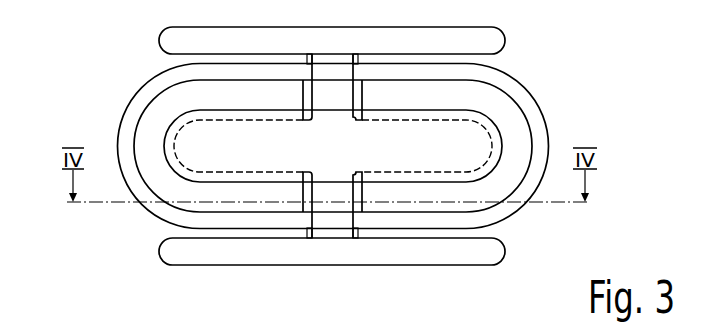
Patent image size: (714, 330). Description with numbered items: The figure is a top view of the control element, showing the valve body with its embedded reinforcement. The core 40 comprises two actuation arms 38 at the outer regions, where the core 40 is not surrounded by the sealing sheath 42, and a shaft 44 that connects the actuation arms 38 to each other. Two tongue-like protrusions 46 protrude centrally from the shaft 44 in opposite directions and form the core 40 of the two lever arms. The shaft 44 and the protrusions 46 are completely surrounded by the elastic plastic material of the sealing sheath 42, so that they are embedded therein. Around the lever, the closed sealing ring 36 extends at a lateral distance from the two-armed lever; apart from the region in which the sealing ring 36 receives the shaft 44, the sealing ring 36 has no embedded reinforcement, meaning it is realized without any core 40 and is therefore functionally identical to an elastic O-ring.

The sealing ring 36 is at (512, 90).
The actuation arms 38 is at (332, 40).
The core 40 is at (210, 248).
The sealing sheath 42 is at (498, 201).
The shaft 44 is at (325, 193).
The tongue-like protrusions 46 is at (188, 158).